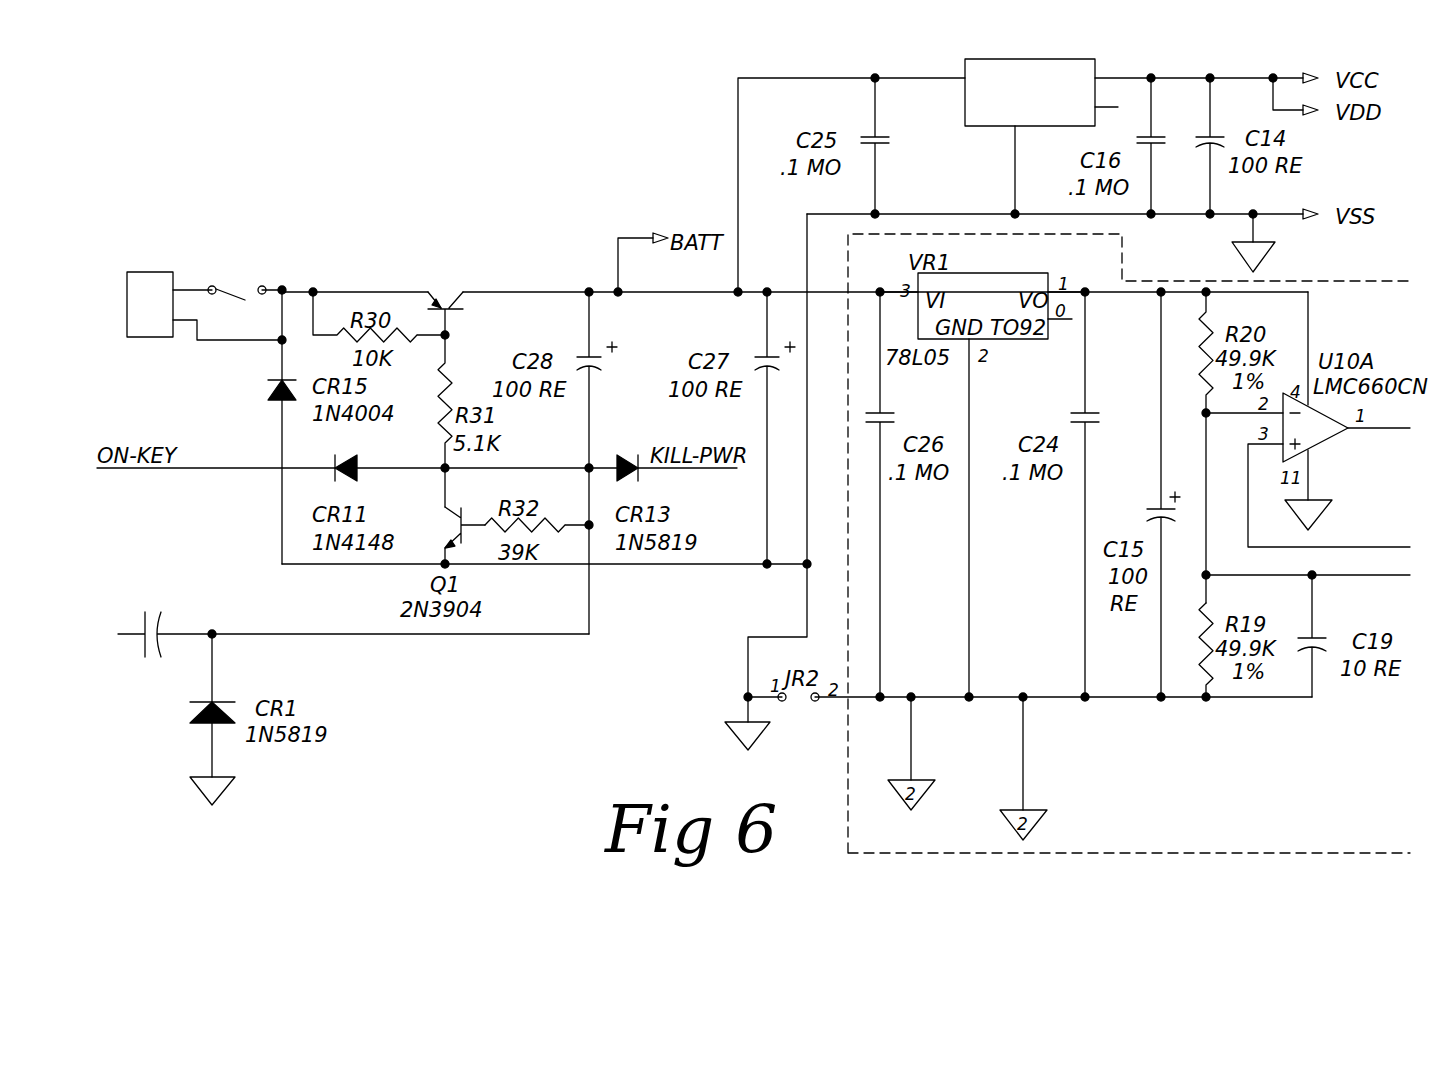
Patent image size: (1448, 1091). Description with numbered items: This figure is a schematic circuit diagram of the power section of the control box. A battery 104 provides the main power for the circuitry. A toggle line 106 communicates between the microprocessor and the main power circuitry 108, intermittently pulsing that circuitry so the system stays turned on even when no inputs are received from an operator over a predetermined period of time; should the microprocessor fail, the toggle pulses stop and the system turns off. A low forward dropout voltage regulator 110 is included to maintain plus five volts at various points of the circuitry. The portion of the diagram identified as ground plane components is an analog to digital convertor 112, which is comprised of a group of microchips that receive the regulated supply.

The battery 104 is at (128, 322).
The toggle line 106 is at (180, 642).
The main power circuitry 108 is at (408, 243).
The low forward dropout voltage regulator 110 is at (1023, 75).
The analog to digital convertor 112 is at (1290, 268).